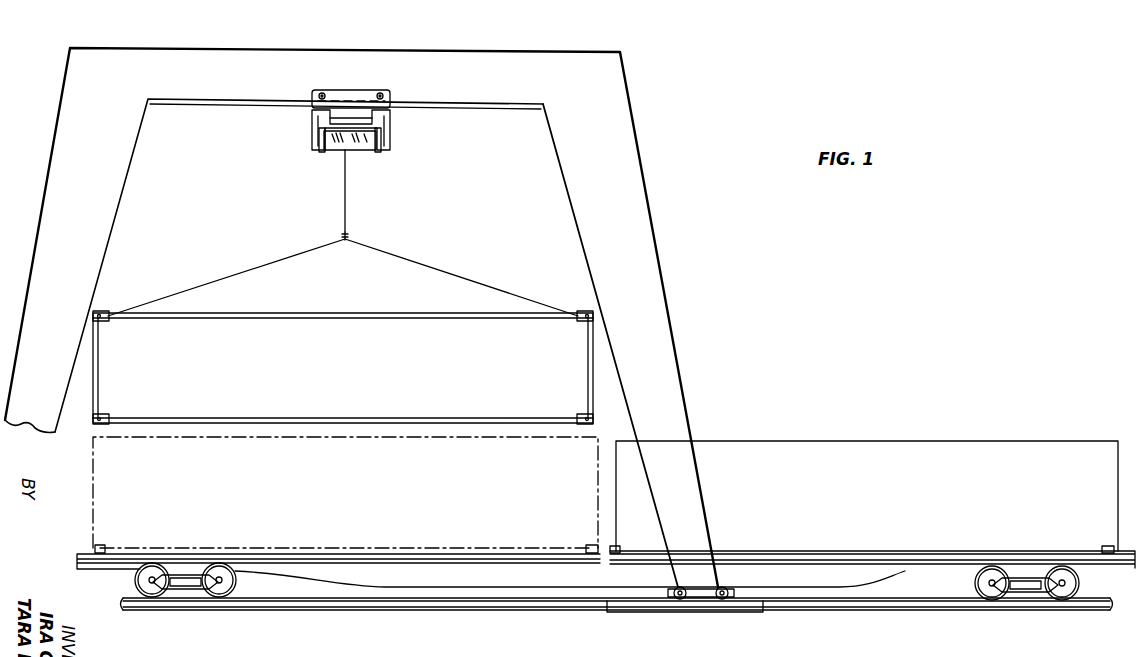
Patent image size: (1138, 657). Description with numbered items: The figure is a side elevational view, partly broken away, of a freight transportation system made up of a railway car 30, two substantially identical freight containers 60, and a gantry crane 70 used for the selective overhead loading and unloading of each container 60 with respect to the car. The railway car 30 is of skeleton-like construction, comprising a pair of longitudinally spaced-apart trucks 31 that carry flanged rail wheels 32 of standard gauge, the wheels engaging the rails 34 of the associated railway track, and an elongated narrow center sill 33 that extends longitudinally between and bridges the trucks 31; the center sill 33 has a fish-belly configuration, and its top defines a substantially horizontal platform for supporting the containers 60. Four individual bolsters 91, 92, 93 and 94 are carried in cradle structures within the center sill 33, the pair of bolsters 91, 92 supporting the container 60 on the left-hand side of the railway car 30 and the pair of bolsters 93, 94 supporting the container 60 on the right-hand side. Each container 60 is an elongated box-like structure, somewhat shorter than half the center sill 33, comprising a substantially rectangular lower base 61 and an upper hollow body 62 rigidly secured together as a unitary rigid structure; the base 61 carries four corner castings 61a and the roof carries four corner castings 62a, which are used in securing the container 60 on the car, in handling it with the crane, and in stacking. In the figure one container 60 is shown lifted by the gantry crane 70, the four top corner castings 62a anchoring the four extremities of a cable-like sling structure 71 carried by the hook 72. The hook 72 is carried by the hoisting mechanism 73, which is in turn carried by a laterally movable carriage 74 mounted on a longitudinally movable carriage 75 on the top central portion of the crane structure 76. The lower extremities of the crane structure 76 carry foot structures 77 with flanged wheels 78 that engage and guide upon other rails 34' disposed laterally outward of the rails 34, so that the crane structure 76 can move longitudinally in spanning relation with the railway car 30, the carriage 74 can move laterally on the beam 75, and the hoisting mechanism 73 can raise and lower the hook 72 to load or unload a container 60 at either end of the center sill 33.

The railway car 30 is at (606, 578).
The trucks 31 is at (185, 592).
The rail wheels 32 is at (232, 583).
The center sill 33 is at (522, 583).
The rails 34 is at (617, 621).
The rails 34' is at (687, 620).
The freight container 60 is at (605, 419).
The lower base 61 is at (218, 419).
The corner castings 61a is at (110, 416).
The upper hollow body 62 is at (322, 330).
The corner castings 62a is at (108, 322).
The gantry crane 70 is at (361, 317).
The sling structure 71 is at (405, 252).
The hook 72 is at (345, 242).
The hoisting mechanism 73 is at (336, 150).
The carriage 74 is at (392, 135).
The carriage 75 is at (355, 92).
The crane structure 76 is at (652, 317).
The foot structures 77 is at (704, 598).
The flanged wheels 78 is at (724, 588).
The bolster 91 is at (105, 547).
The bolster 92 is at (590, 546).
The bolster 93 is at (616, 550).
The bolster 94 is at (1106, 552).